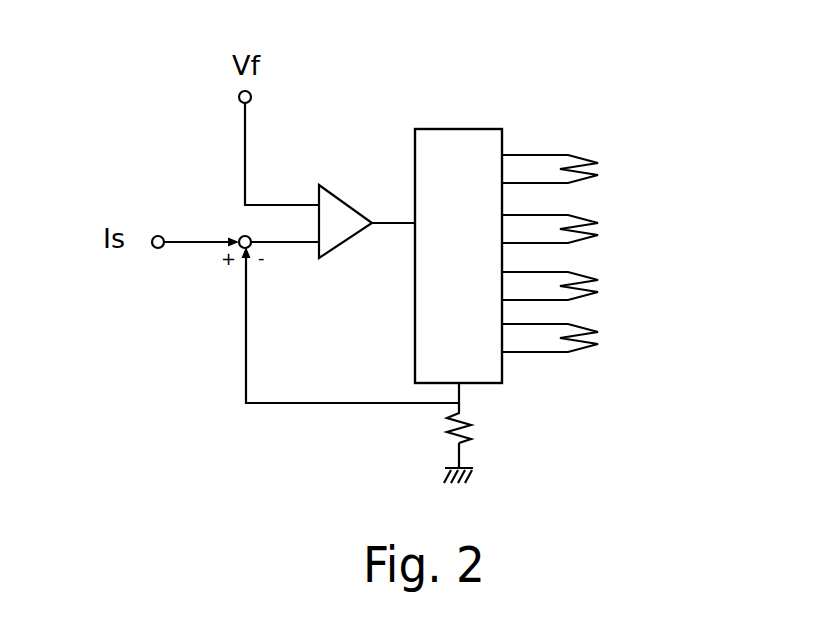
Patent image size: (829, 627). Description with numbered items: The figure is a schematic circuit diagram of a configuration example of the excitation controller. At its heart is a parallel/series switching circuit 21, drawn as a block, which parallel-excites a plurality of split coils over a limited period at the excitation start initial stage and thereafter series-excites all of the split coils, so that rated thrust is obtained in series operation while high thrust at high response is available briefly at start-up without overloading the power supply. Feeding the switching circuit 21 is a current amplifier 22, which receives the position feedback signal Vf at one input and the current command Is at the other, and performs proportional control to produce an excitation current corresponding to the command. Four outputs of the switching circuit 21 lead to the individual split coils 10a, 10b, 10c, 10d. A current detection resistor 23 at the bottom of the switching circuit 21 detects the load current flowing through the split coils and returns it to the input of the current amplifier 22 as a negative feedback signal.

The parallel/series switching circuit 21 is at (448, 180).
The current amplifier 22 is at (342, 215).
The current detection resistor 23 is at (468, 436).
The light emitting element 10a is at (587, 171).
The light emitting element 10b is at (588, 229).
The light emitting element 10c is at (587, 286).
The light emitting element 10d is at (588, 339).